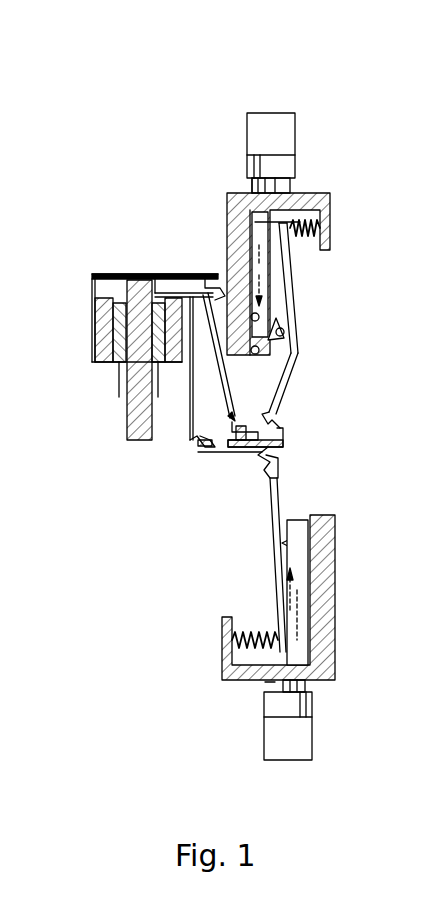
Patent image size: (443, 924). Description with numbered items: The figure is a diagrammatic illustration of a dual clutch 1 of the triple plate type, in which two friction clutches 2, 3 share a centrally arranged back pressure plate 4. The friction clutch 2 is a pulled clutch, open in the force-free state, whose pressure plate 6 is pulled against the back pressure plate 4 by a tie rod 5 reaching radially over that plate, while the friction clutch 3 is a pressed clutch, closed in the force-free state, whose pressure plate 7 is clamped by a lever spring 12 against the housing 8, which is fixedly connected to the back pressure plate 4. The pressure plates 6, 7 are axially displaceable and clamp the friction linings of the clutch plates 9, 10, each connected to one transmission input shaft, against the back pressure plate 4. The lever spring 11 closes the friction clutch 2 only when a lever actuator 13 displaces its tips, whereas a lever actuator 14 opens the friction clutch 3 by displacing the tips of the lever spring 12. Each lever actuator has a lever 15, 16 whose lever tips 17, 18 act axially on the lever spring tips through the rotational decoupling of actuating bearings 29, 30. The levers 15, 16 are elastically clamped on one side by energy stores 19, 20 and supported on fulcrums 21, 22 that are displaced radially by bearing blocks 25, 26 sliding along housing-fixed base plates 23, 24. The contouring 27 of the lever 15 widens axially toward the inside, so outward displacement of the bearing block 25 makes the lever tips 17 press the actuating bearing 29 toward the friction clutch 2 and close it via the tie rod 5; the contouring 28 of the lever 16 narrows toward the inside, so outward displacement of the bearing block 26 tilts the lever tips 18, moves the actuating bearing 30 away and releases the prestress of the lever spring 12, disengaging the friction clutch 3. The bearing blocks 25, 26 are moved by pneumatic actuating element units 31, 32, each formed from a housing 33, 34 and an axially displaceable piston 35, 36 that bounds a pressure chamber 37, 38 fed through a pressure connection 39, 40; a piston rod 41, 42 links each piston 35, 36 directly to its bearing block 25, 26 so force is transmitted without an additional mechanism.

The dual clutch 1 is at (130, 236).
The friction clutch 2 is at (96, 398).
The friction clutch 3 is at (172, 448).
The back pressure plate 4 is at (135, 441).
The tie rod 5 is at (160, 273).
The pressure plate 6 is at (102, 312).
The pressure plate 7 is at (172, 364).
The housing 8 is at (180, 276).
The clutch plate 9 is at (117, 333).
The clutch plate 10 is at (130, 356).
The lever spring 11 is at (275, 393).
The lever spring 12 is at (275, 414).
The lever actuator 13 is at (335, 135).
The lever actuator 14 is at (242, 716).
The lever 15 is at (283, 302).
The lever 16 is at (275, 548).
The lever tips 17 is at (285, 433).
The lever tips 18 is at (282, 462).
The energy store 19 is at (322, 228).
The energy store 20 is at (232, 640).
The fulcrum 21 is at (285, 331).
The fulcrum 22 is at (282, 543).
The base plate 23 is at (263, 290).
The base plate 24 is at (318, 590).
The bearing block 25 is at (270, 345).
The bearing block 26 is at (308, 530).
The contouring 27 is at (290, 320).
The contouring 28 is at (287, 590).
The actuating bearing 29 is at (280, 452).
The actuating bearing 30 is at (204, 452).
The pneumatic actuating element unit 31 is at (266, 95).
The pneumatic actuating element unit 32 is at (320, 740).
The housing 33 is at (295, 120).
The housing 34 is at (264, 760).
The piston 35 is at (283, 165).
The piston 36 is at (312, 716).
The pressure chamber 37 is at (245, 188).
The pressure chamber 38 is at (272, 690).
The pressure connection 39 is at (292, 187).
The pressure connection 40 is at (312, 690).
The piston rod 41 is at (285, 218).
The piston rod 42 is at (308, 646).